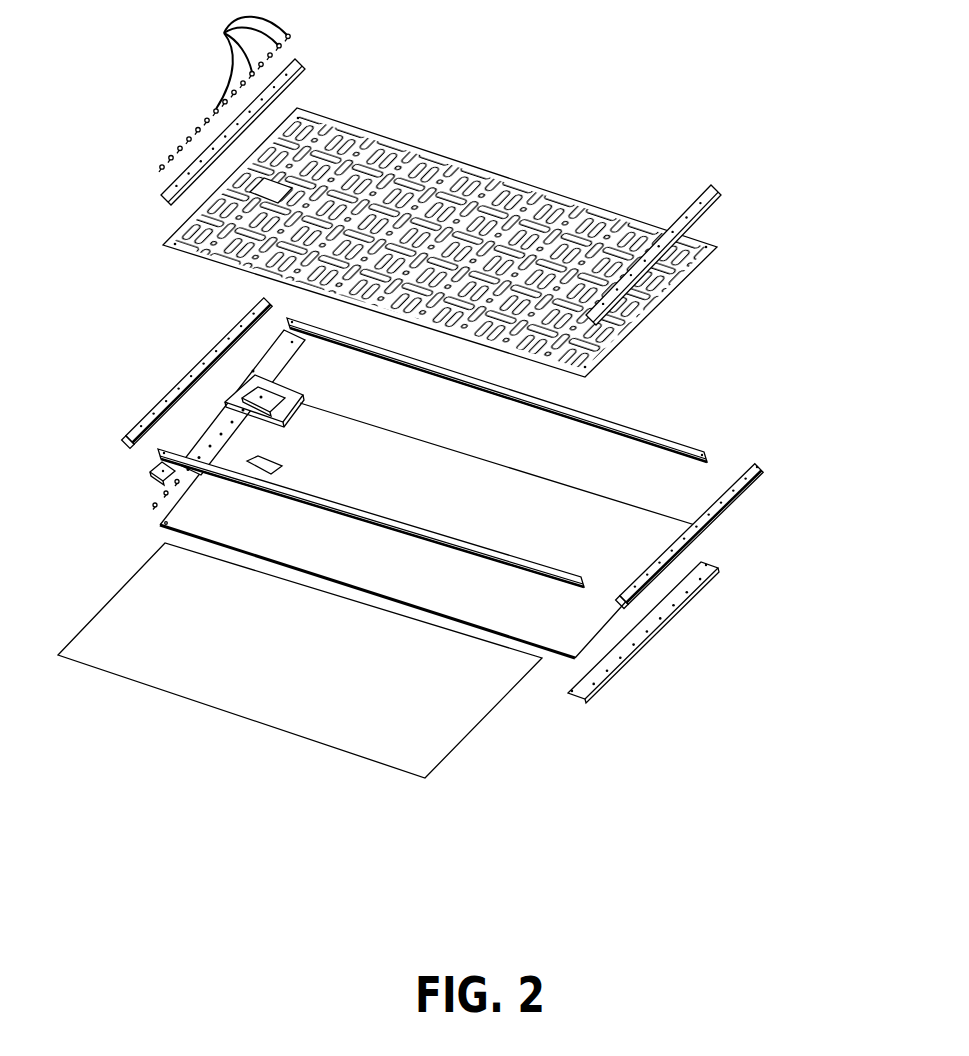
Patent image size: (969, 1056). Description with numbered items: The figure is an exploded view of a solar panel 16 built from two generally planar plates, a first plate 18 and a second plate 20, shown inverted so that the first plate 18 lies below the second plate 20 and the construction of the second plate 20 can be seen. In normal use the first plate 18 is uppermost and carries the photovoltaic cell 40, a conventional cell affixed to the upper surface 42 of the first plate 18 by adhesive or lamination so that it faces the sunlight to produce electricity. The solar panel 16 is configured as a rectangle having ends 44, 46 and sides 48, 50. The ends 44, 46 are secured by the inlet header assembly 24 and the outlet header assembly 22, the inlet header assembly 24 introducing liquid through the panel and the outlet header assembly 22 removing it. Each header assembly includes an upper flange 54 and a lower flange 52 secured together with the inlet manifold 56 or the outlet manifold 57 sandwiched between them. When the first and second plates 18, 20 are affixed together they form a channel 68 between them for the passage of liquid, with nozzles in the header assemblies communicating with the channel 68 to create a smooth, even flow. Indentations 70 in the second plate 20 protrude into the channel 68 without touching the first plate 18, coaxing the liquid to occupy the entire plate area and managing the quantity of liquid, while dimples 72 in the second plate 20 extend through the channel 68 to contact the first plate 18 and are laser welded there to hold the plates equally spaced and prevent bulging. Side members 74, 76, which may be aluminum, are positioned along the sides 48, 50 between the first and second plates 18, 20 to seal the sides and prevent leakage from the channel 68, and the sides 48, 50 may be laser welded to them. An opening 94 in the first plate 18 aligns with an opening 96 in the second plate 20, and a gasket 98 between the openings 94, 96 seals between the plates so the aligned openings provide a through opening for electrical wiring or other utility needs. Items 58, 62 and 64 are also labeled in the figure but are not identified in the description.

The solar panel 16 is at (708, 140).
The first plate 18 is at (567, 638).
The second plate 20 is at (479, 168).
The outlet header assembly 22 is at (182, 402).
The inlet header assembly 24 is at (723, 536).
The photovoltaic cell 40 is at (434, 741).
The upper surface 42 is at (300, 682).
The end 44 is at (122, 237).
The end 46 is at (810, 298).
The side 48 is at (436, 188).
The side 50 is at (125, 727).
The lower flange 52 is at (718, 190).
The upper flange 54 is at (150, 477).
The inlet manifold 56 is at (732, 501).
The outlet manifold 57 is at (232, 346).
The wires 58 is at (224, 94).
The panel edge 62 is at (663, 297).
The bar edge 64 is at (603, 635).
The channel 68 is at (574, 391).
The indentations 70 is at (373, 150).
The dimples 72 is at (591, 219).
The side member 74 is at (692, 443).
The side member 76 is at (510, 561).
The opening 94 is at (282, 474).
The opening 96 is at (272, 189).
The gasket 98 is at (293, 396).